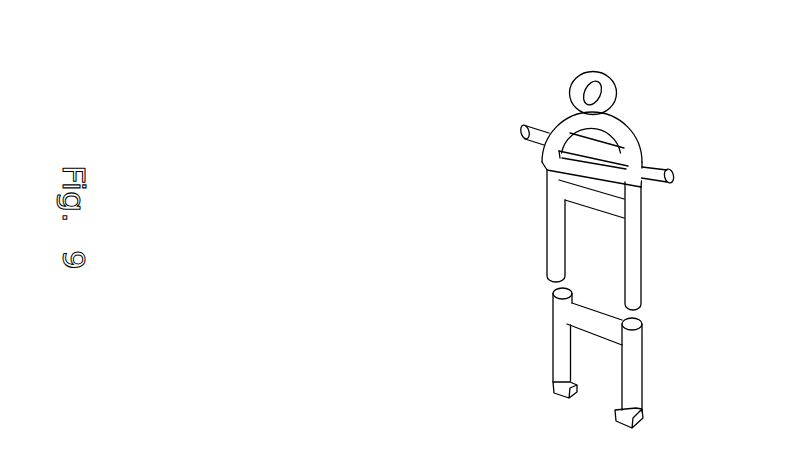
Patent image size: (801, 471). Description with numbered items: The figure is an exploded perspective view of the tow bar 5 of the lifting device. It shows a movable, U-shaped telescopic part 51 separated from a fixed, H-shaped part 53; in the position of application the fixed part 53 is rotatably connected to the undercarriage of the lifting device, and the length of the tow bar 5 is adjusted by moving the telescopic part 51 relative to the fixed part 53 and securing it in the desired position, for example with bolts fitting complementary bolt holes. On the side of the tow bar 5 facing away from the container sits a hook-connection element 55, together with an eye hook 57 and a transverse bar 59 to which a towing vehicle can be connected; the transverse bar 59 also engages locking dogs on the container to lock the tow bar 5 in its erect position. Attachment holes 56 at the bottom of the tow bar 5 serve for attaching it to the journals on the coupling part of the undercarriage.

The tow bar 5 is at (505, 222).
The telescopic part 51 is at (643, 240).
The fixed part 53 is at (643, 353).
The hook-connection element 55 is at (576, 166).
The attachment holes 56 is at (645, 412).
The eye hook 57 is at (592, 80).
The transverse bar 59 is at (664, 166).